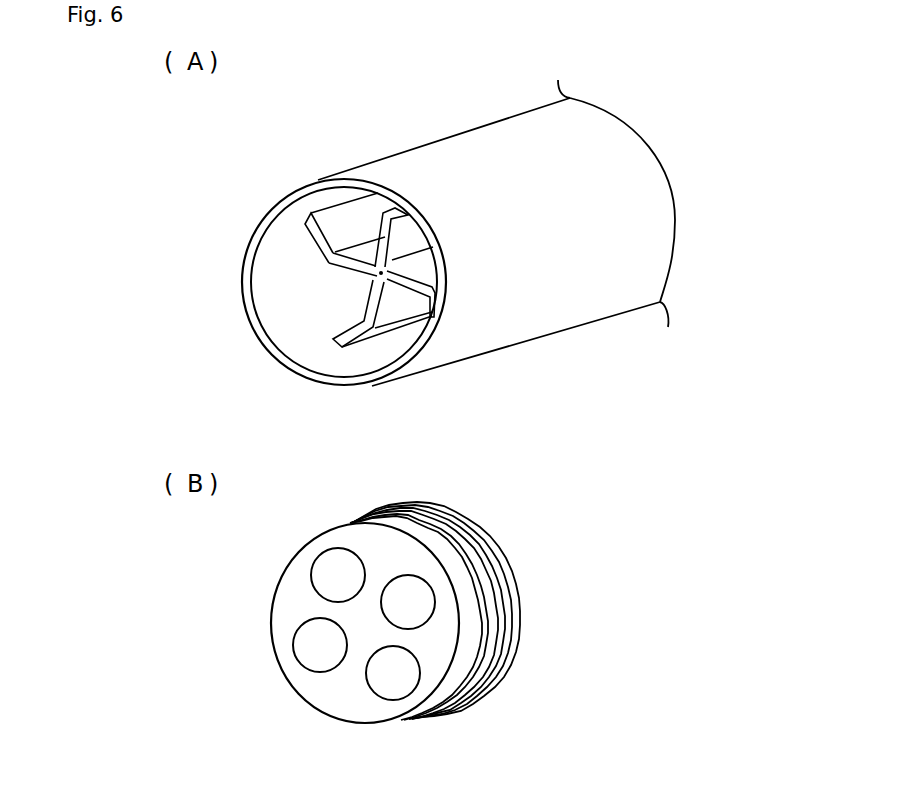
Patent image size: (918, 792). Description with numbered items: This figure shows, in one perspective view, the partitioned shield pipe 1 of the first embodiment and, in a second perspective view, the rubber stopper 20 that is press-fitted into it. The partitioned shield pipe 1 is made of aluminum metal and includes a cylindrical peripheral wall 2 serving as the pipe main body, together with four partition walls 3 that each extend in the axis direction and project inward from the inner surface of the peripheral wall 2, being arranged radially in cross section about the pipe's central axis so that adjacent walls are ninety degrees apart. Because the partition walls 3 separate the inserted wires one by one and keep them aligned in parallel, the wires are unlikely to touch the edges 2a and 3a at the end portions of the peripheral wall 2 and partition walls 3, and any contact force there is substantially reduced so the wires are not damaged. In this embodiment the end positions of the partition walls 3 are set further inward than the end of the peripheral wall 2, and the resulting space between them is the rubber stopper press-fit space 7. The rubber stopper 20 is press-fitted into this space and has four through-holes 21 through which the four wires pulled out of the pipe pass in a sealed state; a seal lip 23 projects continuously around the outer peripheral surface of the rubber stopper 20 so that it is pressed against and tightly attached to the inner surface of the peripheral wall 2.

The partitioned shield pipe 1 is at (230, 160).
The peripheral wall 2 is at (375, 146).
The edge of end portion of peripheral wall 2a is at (258, 241).
The partition wall 3 is at (339, 252).
The edge of end portion of partition wall 3a is at (330, 238).
The rubber stopper press-fit space 7 is at (300, 294).
The rubber stopper 20 is at (261, 518).
The through-hole 21 is at (328, 573).
The seal lip 23 is at (488, 609).